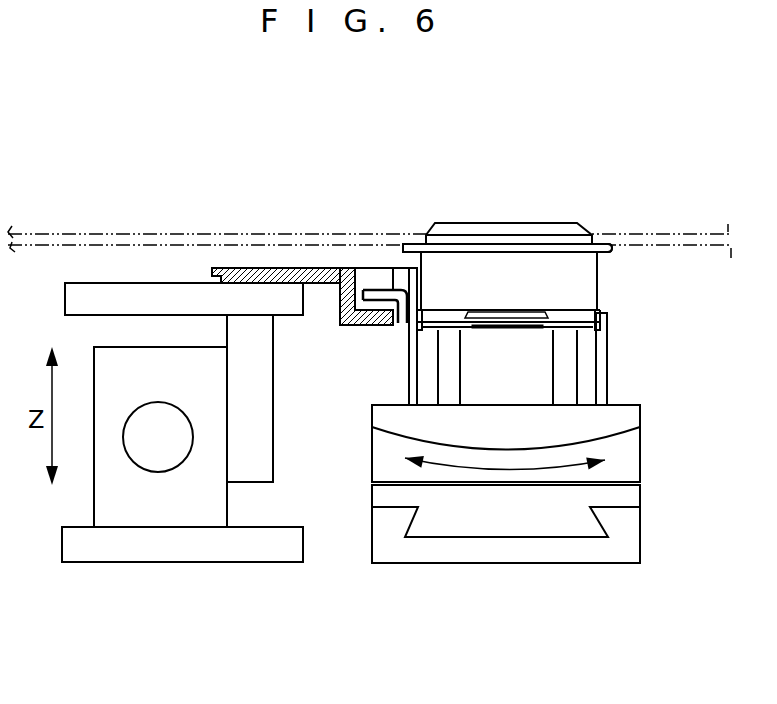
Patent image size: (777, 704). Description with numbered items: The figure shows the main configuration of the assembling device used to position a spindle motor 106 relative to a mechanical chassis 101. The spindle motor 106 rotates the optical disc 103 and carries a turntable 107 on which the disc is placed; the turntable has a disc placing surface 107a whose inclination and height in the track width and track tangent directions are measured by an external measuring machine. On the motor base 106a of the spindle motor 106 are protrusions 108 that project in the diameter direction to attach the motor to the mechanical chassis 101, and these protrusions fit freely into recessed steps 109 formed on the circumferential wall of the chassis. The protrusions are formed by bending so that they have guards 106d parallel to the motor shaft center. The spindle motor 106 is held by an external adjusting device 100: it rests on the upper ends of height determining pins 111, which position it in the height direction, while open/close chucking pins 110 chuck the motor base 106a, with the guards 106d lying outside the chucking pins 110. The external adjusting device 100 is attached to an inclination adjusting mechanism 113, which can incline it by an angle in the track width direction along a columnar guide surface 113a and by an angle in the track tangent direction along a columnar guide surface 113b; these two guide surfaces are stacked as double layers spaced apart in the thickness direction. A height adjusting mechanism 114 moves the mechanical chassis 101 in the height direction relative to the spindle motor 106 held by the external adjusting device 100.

The external adjusting device 100 is at (518, 379).
The mechanical chassis 101 is at (260, 275).
The optical disc 103 is at (672, 233).
The spindle motor 106 is at (523, 222).
The motor base 106a is at (512, 322).
The guards 106d is at (392, 323).
The turntable 107 is at (610, 250).
The disc placing surface 107a is at (610, 245).
The protrusions 108 is at (387, 297).
The recessed steps 109 is at (368, 280).
The chucking pins 110 is at (410, 383).
The height determining pins 111 is at (448, 383).
The inclination adjusting mechanism 113 is at (547, 515).
The columnar guide surface 113a is at (627, 433).
The columnar guide surface 113b is at (488, 537).
The height adjusting mechanism 114 is at (150, 385).